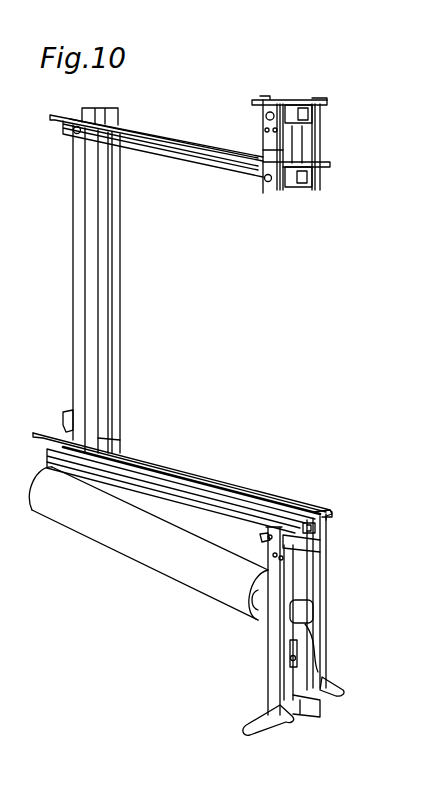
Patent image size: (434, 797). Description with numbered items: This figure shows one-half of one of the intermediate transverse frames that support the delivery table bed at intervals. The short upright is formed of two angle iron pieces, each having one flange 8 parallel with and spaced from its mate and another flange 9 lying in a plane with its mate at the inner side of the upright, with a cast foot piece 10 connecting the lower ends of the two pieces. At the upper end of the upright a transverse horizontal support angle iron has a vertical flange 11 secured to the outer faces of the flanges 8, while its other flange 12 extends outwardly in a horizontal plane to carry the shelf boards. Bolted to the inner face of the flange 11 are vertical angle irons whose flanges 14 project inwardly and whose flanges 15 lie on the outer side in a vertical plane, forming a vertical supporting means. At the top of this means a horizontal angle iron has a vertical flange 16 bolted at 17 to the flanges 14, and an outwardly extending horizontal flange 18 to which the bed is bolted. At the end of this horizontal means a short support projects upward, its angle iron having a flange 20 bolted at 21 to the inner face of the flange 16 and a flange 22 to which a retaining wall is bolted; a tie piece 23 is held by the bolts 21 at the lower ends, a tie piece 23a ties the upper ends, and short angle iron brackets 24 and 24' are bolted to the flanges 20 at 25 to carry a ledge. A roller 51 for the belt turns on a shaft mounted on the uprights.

The flange 8 is at (313, 598).
The flange 9 is at (297, 567).
The cast foot piece 10 is at (268, 723).
The flange 11 is at (232, 527).
The flange 12 is at (253, 482).
The flange 14 is at (85, 322).
The flange 15 is at (92, 370).
The vertical flange 16 is at (202, 163).
The bolt 17 is at (76, 133).
The flange 18 is at (173, 140).
The flange 20 is at (307, 143).
The bolt 21 is at (268, 182).
The flange 22 is at (295, 137).
The tie piece 23 is at (300, 188).
The tie piece 23a is at (288, 102).
The short angle iron bracket 24 is at (285, 82).
The flange 24' is at (357, 99).
The bolt 25 is at (265, 117).
The roller 51 is at (233, 603).